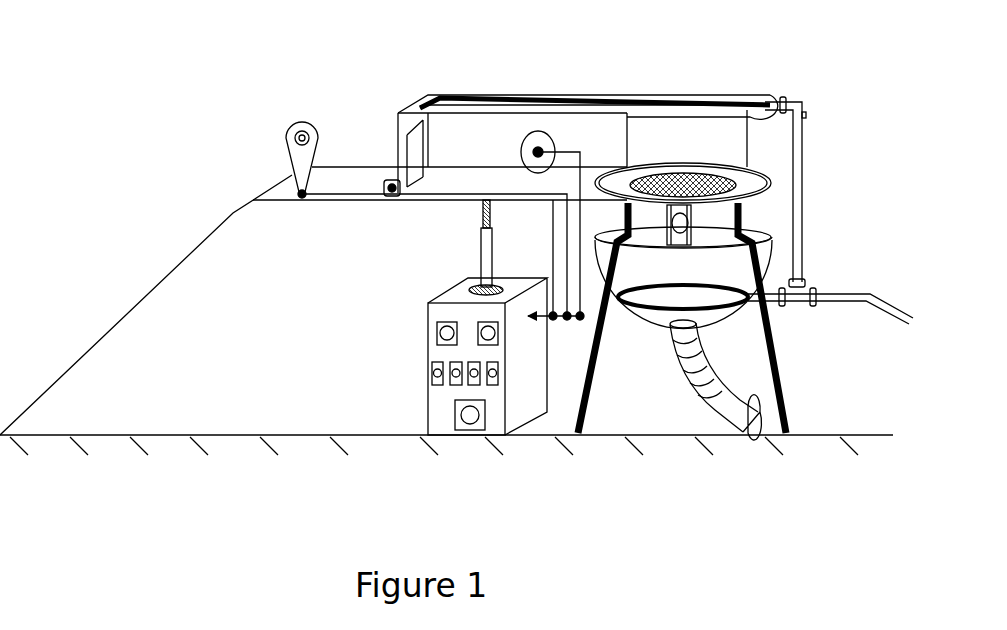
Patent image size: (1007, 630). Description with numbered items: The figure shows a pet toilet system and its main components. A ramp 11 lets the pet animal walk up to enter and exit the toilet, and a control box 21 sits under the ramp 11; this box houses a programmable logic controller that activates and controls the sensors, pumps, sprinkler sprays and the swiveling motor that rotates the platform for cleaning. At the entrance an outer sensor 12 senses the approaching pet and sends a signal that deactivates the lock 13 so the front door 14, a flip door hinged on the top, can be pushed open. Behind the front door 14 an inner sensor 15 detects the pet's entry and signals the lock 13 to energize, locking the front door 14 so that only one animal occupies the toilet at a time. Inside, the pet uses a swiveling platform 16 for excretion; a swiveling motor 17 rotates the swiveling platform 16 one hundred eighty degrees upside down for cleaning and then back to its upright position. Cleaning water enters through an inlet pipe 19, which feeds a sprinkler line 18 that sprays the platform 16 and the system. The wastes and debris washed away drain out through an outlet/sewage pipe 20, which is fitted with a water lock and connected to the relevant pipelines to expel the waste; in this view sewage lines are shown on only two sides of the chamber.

The ramp 11 is at (183, 252).
The outer sensor 12 is at (303, 118).
The lock 13 is at (395, 202).
The front door 14 is at (414, 128).
The inner sensor 15 is at (538, 128).
The swiveling platform 16 is at (698, 177).
The swiveling motor 17 is at (695, 218).
The sprinkler line 18 is at (682, 92).
The inlet pipe 19 is at (883, 316).
The outlet/sewage pipe 20 is at (737, 392).
The control box 21 is at (426, 342).